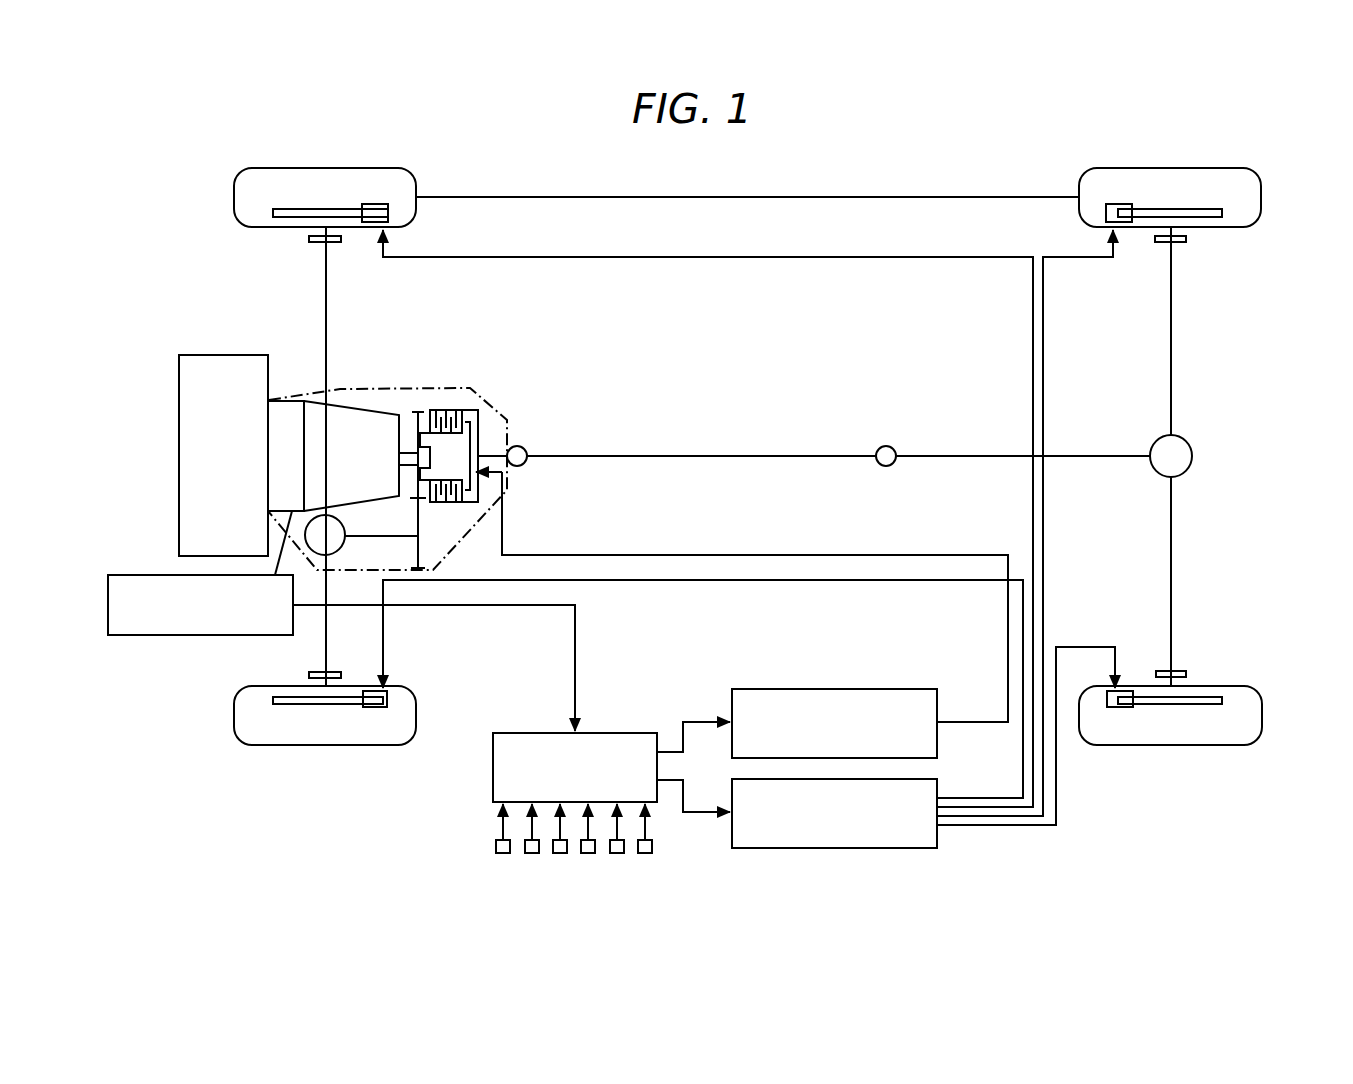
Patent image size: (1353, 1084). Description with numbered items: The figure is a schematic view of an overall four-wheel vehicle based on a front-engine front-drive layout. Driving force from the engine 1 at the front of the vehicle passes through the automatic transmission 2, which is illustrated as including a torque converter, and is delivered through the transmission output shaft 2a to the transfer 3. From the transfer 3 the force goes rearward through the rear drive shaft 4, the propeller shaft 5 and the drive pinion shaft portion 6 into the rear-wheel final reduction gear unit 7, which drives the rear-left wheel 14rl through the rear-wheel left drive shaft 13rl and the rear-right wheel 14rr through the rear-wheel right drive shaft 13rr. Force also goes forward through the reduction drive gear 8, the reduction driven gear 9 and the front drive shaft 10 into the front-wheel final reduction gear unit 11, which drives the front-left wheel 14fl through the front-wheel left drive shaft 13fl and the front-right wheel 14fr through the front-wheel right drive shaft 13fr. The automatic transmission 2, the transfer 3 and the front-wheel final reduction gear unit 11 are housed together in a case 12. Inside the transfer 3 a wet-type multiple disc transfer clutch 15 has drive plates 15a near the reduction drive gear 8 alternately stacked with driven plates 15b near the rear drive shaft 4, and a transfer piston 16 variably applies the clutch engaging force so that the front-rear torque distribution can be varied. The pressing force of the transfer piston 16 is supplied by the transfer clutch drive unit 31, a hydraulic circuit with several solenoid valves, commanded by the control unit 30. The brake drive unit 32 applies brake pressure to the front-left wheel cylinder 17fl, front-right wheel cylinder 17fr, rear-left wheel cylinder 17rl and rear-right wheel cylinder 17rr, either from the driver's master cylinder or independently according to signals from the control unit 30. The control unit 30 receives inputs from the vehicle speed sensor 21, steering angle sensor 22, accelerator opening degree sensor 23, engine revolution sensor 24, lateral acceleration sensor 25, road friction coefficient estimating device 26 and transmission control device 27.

The engine 1 is at (180, 437).
The automatic transmission 2 is at (318, 410).
The transmission output shaft 2a is at (408, 452).
The transfer 3 is at (450, 515).
The rear drive shaft 4 is at (511, 448).
The propeller shaft 5 is at (705, 455).
The drive pinion shaft portion 6 is at (979, 455).
The rear-wheel final reduction gear unit 7 is at (1186, 453).
The reduction drive gear 8 is at (418, 410).
The reduction driven gear 9 is at (412, 500).
The front drive shaft 10 is at (360, 537).
The front-wheel final reduction gear unit 11 is at (335, 548).
The case 12 is at (353, 388).
The front-wheel right drive shaft 13fr is at (326, 323).
The front-wheel left drive shaft 13fl is at (326, 655).
The rear-wheel right drive shaft 13rr is at (1171, 318).
The rear-wheel left drive shaft 13rl is at (1171, 585).
The front-right wheel 14fr is at (277, 168).
The front-left wheel 14fl is at (272, 745).
The rear-right wheel 14rr is at (1200, 170).
The rear-left wheel 14rl is at (1225, 740).
The transfer clutch 15 is at (476, 407).
The drive plates 15a is at (455, 422).
The driven plates 15b is at (459, 422).
The transfer piston 16 is at (472, 424).
The front-right wheel cylinder 17fr is at (383, 204).
The front-left wheel cylinder 17fl is at (380, 707).
The rear-right wheel cylinder 17rr is at (1113, 204).
The rear-left wheel cylinder 17rl is at (1113, 707).
The vehicle speed sensor 21 is at (504, 853).
The steering angle sensor 22 is at (533, 853).
The accelerator opening degree sensor 23 is at (561, 853).
The engine revolution sensor 24 is at (589, 853).
The lateral acceleration sensor 25 is at (618, 853).
The road friction coefficient estimating device 26 is at (646, 853).
The transmission control device 27 is at (142, 575).
The control unit 30 is at (630, 733).
The transfer clutch drive unit 31 is at (937, 697).
The brake drive unit 32 is at (937, 790).